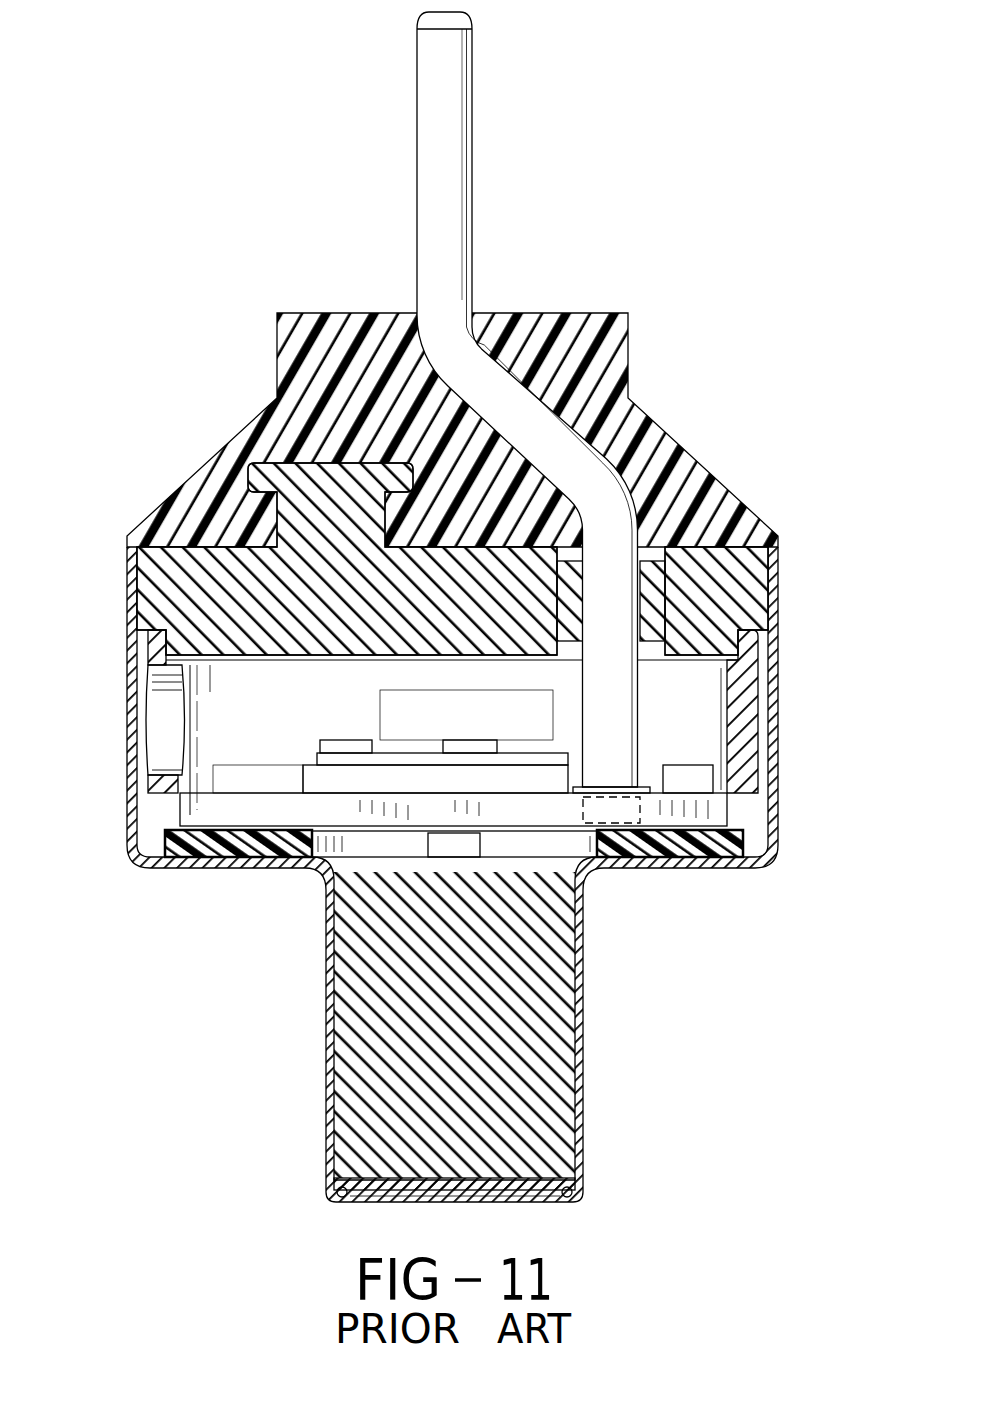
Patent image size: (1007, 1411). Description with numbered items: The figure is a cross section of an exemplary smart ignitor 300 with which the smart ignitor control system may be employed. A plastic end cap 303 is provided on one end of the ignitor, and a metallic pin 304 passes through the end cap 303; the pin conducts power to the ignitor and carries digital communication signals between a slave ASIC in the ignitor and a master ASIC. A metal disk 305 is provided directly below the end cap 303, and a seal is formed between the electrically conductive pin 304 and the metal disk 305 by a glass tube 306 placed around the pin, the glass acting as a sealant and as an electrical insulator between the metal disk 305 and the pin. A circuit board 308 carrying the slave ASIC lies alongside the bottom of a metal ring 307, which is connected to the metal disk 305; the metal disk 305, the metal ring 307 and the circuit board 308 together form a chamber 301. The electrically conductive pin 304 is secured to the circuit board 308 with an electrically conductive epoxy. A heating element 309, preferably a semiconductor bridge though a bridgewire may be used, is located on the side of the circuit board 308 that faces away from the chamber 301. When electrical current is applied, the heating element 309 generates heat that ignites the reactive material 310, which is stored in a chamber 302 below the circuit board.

The smart ignitor 300 is at (258, 175).
The chamber 301 is at (230, 740).
The chamber 302 is at (522, 1048).
The plastic end cap 303 is at (617, 335).
The metallic pin 304 is at (472, 88).
The metal disk 305 is at (730, 598).
The glass tube 306 is at (657, 615).
The metal ring 307 is at (687, 733).
The circuit board 308 is at (707, 812).
The heating element 309 is at (447, 853).
The reactive material 310 is at (403, 1008).